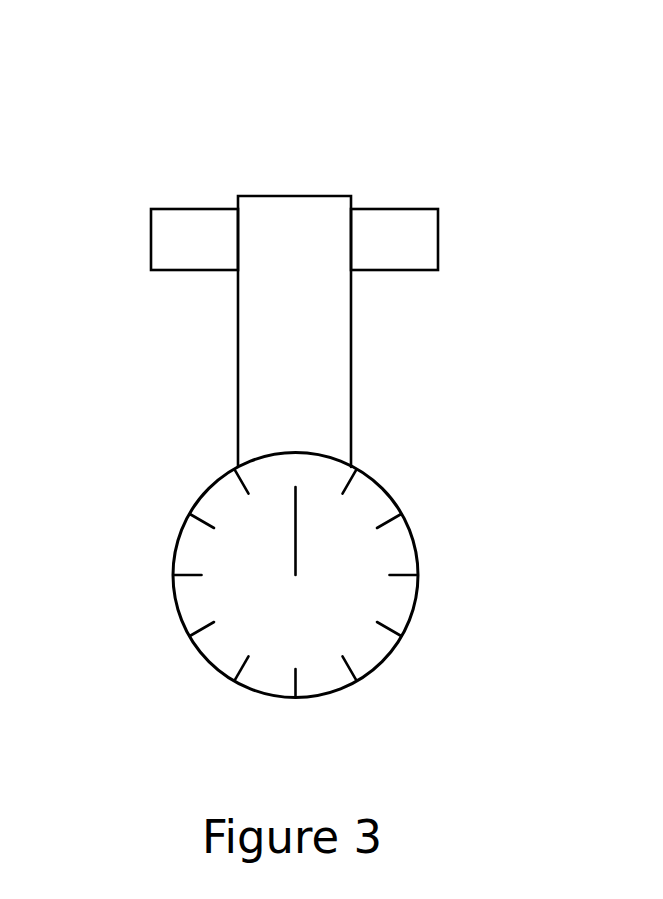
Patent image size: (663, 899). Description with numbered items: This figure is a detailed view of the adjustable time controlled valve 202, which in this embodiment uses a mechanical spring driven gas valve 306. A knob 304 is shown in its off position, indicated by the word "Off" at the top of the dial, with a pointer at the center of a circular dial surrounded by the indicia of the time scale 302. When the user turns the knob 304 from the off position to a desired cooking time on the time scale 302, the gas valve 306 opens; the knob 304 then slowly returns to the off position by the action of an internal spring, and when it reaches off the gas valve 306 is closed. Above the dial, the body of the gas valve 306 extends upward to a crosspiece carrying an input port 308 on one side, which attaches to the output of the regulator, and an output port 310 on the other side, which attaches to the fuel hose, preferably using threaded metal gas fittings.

The adjustable time controlled valve 202 is at (203, 111).
The time scale 302 is at (190, 546).
The knob 304 is at (297, 522).
The gas valve 306 is at (338, 396).
The input port 308 is at (178, 246).
The output port 310 is at (413, 245).